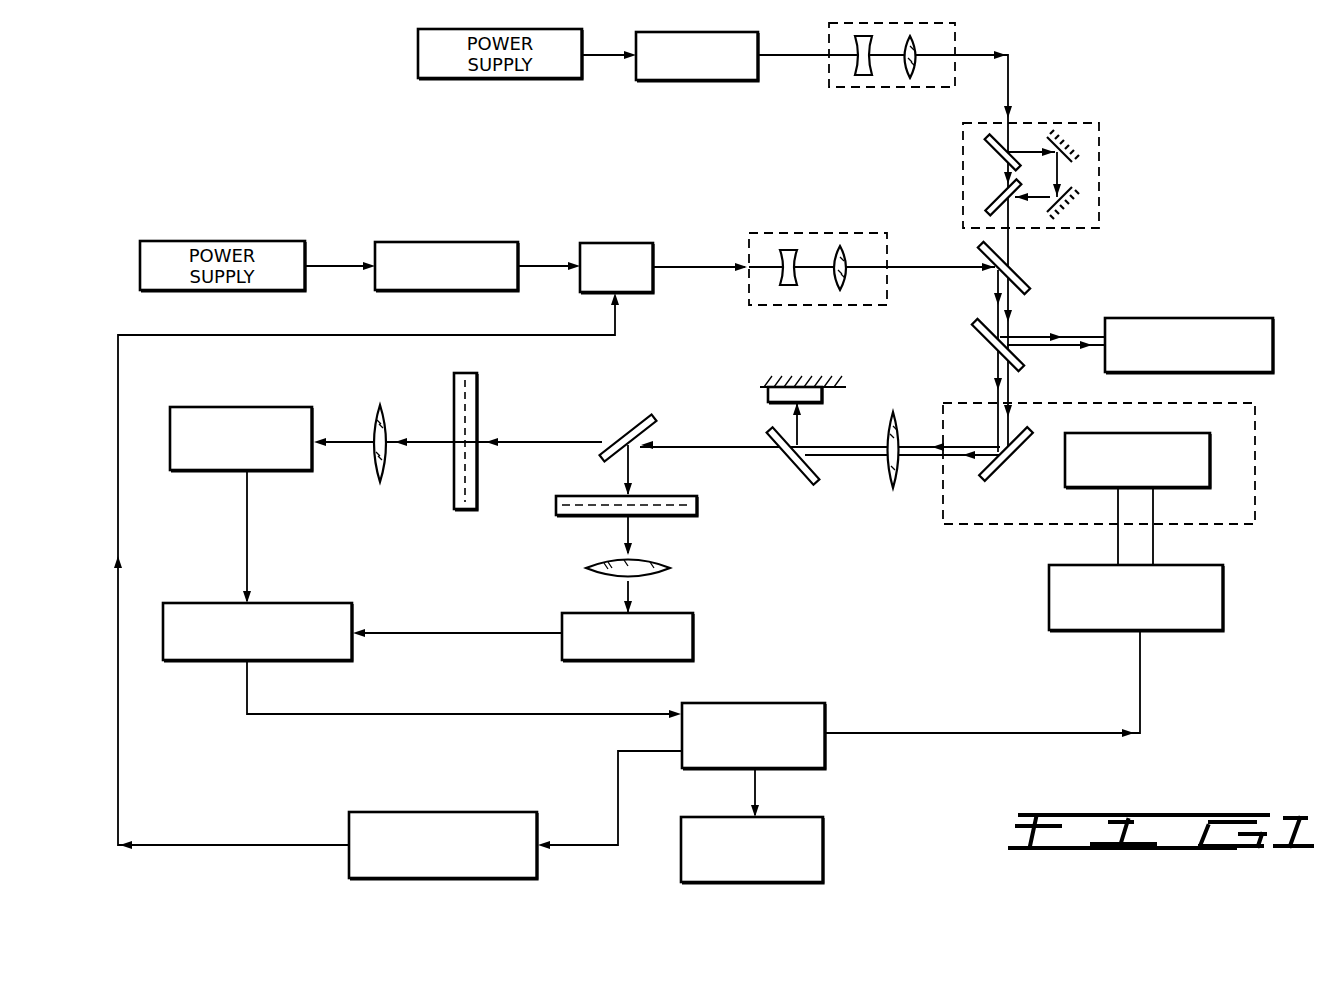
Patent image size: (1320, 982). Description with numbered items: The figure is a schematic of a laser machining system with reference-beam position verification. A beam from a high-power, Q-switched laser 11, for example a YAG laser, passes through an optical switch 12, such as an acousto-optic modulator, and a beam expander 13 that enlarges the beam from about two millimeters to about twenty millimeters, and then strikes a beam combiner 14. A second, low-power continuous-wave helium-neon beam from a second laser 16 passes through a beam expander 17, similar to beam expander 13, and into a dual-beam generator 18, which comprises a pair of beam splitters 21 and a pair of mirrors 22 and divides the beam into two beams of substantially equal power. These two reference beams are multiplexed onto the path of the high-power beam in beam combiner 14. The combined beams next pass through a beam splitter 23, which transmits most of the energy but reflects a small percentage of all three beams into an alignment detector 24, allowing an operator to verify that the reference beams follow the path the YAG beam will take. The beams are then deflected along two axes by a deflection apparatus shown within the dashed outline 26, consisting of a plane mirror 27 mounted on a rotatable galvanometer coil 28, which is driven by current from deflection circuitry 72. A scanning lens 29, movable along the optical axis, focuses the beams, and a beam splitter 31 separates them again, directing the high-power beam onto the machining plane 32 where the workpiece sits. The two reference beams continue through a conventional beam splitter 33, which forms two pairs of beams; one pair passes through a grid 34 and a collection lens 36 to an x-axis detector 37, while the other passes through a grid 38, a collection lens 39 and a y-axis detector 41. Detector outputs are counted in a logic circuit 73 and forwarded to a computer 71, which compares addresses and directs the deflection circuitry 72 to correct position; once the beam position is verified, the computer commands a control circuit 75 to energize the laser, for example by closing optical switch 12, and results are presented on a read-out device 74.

The laser 11 is at (484, 241).
The optical switch 12 is at (618, 243).
The beam expander 13 is at (862, 233).
The beam combiner 14 is at (1020, 276).
The second laser 16 is at (689, 80).
The beam expander 17 is at (906, 89).
The dual-beam generator 18 is at (1044, 122).
The beam splitters 21 is at (995, 194).
The mirrors 22 is at (1066, 195).
The beam splitter 23 is at (980, 336).
The alignment detector 24 is at (1168, 318).
The galvanometer assembly 26 is at (1257, 505).
The plane mirror 27 is at (997, 470).
The galvanometer coil 28 is at (1175, 433).
The scanning lens 29 is at (900, 481).
The beam splitter 31 is at (803, 485).
The machining plane 32 is at (762, 386).
The beam splitter 33 is at (628, 420).
The grid 34 is at (478, 415).
The collection lens 36 is at (385, 415).
The x-axis detector 37 is at (265, 407).
The grid 38 is at (699, 512).
The collection lens 39 is at (590, 573).
The y-axis detector 41 is at (695, 637).
The computer 71 is at (828, 720).
The deflection circuitry 72 is at (1226, 598).
The logic circuit 73 is at (345, 603).
The read-out device 74 is at (826, 862).
The control circuit 75 is at (505, 812).